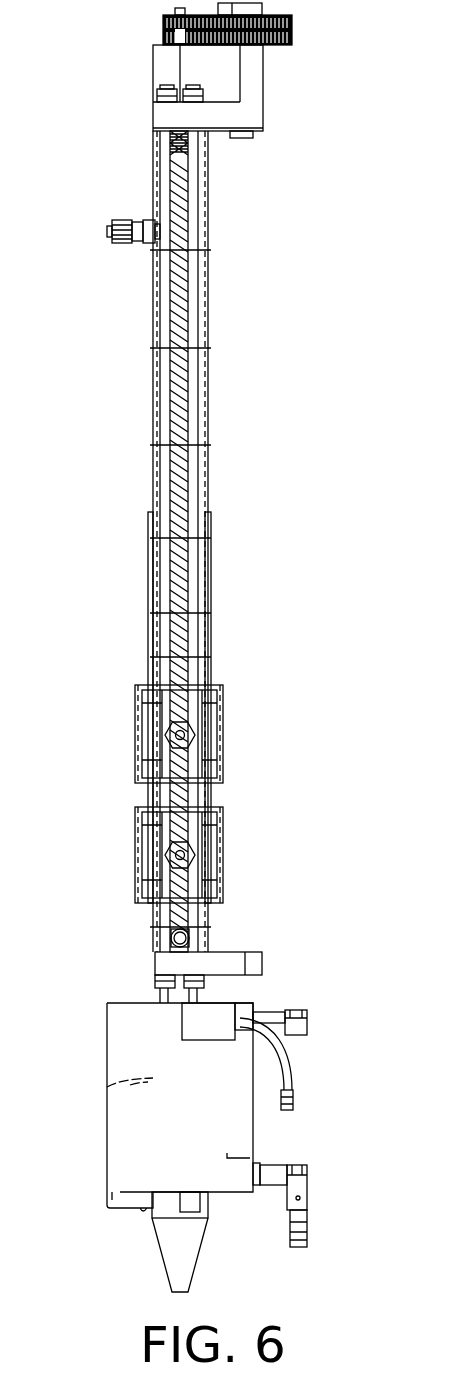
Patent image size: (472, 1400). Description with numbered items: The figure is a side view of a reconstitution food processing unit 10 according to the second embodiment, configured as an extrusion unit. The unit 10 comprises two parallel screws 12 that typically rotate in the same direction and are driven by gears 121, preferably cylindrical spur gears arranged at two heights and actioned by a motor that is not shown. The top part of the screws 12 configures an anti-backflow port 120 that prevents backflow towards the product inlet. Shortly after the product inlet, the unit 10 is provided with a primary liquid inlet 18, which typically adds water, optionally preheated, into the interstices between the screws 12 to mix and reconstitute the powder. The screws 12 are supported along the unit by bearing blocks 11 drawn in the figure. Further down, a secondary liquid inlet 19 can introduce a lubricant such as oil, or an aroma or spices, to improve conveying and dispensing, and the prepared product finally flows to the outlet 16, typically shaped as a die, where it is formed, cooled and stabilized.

The food processing unit 10 is at (270, 472).
The bearing block 11 is at (142, 735).
The screws 12 is at (172, 477).
The outlet 16 is at (163, 1255).
The primary liquid inlet 18 is at (105, 232).
The secondary liquid inlet 19 is at (263, 962).
The anti-backflow port 120 is at (172, 140).
The gears 121 is at (293, 22).